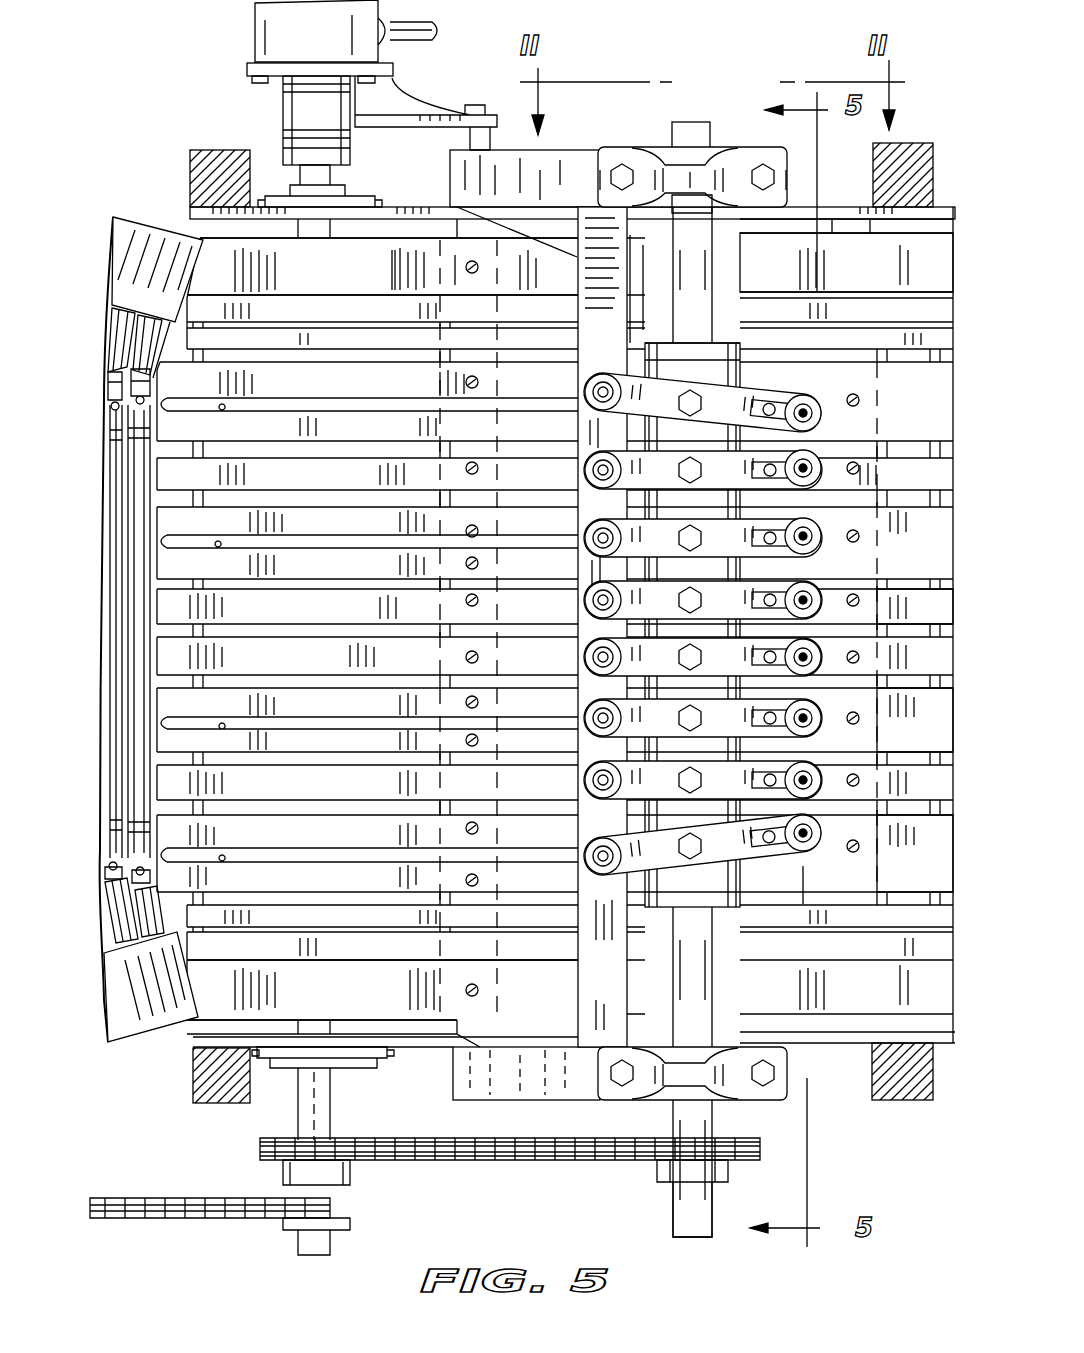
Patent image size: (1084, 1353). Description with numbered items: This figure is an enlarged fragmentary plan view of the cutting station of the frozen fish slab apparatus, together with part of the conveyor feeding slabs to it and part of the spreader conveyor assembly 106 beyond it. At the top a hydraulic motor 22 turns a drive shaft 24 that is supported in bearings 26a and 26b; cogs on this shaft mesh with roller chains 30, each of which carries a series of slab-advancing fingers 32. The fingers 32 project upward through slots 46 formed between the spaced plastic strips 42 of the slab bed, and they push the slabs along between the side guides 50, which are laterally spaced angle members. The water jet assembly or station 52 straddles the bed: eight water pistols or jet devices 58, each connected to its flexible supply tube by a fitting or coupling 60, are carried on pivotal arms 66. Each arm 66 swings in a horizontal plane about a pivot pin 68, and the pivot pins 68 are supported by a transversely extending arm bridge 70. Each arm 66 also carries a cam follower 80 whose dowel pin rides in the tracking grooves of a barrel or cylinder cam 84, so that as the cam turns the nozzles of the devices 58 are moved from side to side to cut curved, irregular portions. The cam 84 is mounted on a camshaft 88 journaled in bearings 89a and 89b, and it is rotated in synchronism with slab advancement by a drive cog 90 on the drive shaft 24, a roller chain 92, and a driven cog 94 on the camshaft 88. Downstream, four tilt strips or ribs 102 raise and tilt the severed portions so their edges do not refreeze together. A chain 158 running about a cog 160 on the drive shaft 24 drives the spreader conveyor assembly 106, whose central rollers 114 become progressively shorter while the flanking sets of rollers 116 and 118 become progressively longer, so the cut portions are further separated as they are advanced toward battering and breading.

The hydraulic motor 22 is at (252, 12).
The drive shaft 24 is at (323, 1255).
The bearing 26a is at (364, 197).
The bearing 26b is at (333, 1065).
The roller chain 30 is at (900, 688).
The slab-advancing fingers 32 is at (436, 360).
The plastic strips 42 is at (920, 308).
The slots 46 is at (250, 512).
The side guides 50 is at (380, 296).
The water jet assembly or station 52 is at (720, 884).
The water pistols or jet devices 58 is at (762, 370).
The fitting or coupling 60 is at (806, 395).
The pivotal arm 66 is at (656, 406).
The pivot pin 68 is at (603, 382).
The arm bridge 70 is at (594, 197).
The cam follower 80 is at (687, 630).
The barrel or cylinder cam 84 is at (668, 356).
The camshaft 88 is at (687, 1240).
The bearing 89a is at (724, 152).
The bearing 89b is at (652, 1095).
The drive cog 90 is at (260, 1148).
The roller chain 92 is at (520, 1160).
The driven cog 94 is at (750, 1150).
The tilt strips or ribs 102 is at (496, 272).
The spreader conveyor assembly 106 is at (126, 183).
The central rollers 114 is at (128, 570).
The rollers 116 is at (103, 318).
The rollers 118 is at (100, 974).
The chain 158 is at (160, 1233).
The cog 160 is at (356, 1204).